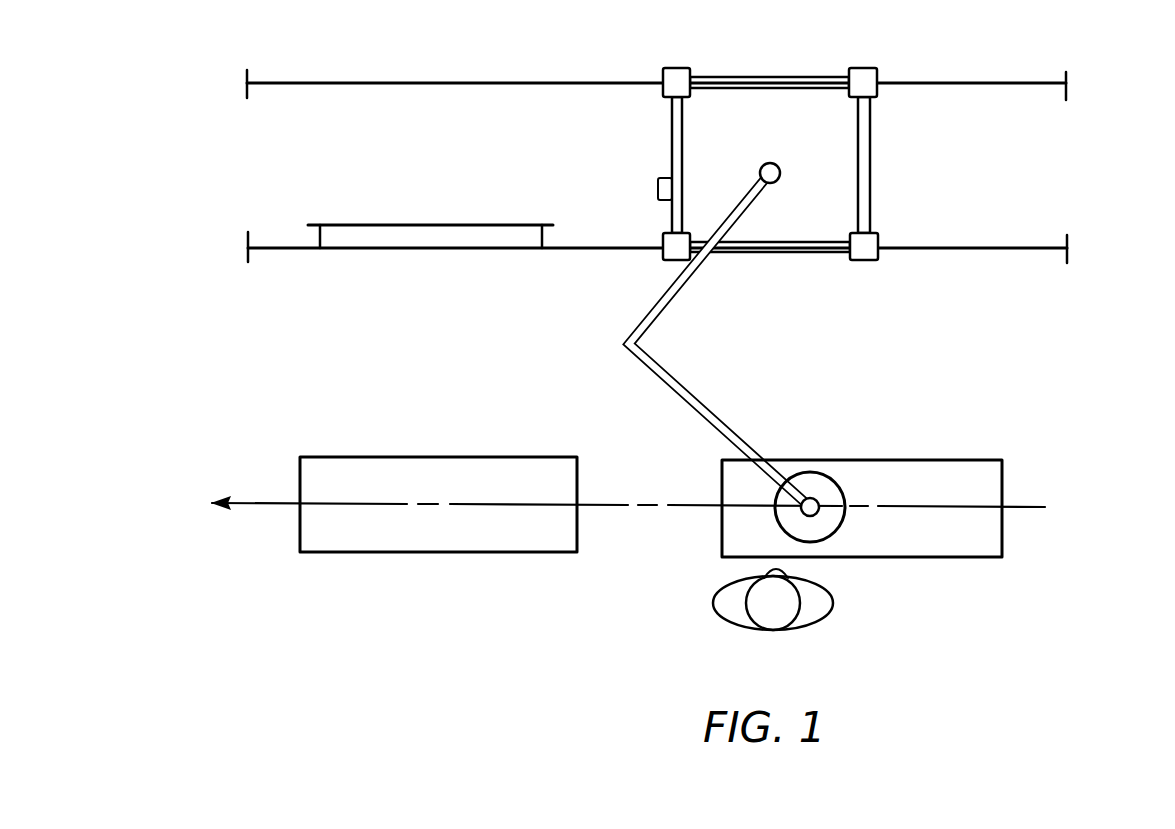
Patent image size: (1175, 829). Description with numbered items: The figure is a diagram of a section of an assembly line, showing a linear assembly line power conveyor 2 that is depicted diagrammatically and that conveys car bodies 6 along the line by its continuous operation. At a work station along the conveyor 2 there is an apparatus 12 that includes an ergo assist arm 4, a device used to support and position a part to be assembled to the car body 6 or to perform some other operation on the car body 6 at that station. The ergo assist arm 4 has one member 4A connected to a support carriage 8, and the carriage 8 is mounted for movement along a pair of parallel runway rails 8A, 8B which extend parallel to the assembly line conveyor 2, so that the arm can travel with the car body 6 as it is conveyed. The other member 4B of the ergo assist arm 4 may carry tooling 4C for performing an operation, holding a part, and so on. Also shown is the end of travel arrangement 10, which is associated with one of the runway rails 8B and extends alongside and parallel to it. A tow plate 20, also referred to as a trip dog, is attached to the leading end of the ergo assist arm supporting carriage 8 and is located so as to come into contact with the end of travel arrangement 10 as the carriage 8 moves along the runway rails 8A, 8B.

The linear assembly line power conveyor 2 is at (272, 505).
The ergo assist arm 4 is at (627, 332).
The member of the ergo assist arm 4A is at (690, 283).
The other member of the ergo assist arm 4B is at (700, 403).
The tooling 4C is at (830, 477).
The car body 6 is at (467, 552).
The support carriage 8 is at (745, 75).
The runway rail 8A is at (1023, 87).
The runway rail 8B is at (1015, 252).
The end of travel arrangement 10 is at (378, 225).
The apparatus 12 is at (968, 55).
The tow plate 20 is at (667, 177).